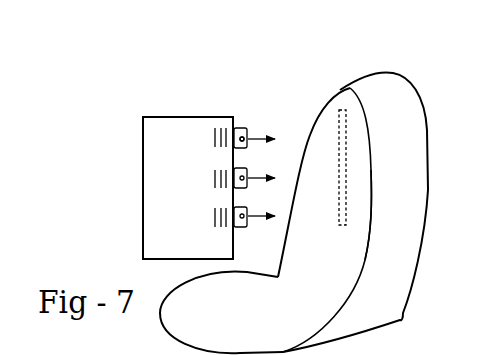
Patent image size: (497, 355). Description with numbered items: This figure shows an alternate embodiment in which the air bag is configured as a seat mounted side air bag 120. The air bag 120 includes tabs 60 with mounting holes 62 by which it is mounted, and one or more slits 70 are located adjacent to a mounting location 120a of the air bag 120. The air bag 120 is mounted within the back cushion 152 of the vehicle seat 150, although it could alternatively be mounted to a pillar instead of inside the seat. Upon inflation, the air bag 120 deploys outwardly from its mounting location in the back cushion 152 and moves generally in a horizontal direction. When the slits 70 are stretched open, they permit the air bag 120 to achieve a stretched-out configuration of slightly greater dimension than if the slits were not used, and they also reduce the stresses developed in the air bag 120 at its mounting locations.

The seat mounted side air bag 120 is at (178, 157).
The mounting location 120a is at (347, 118).
The slits 70 is at (211, 138).
The tabs 60 is at (240, 128).
The mounting holes 62 is at (246, 135).
The vehicle seat 150 is at (328, 105).
The back cushion 152 is at (362, 172).